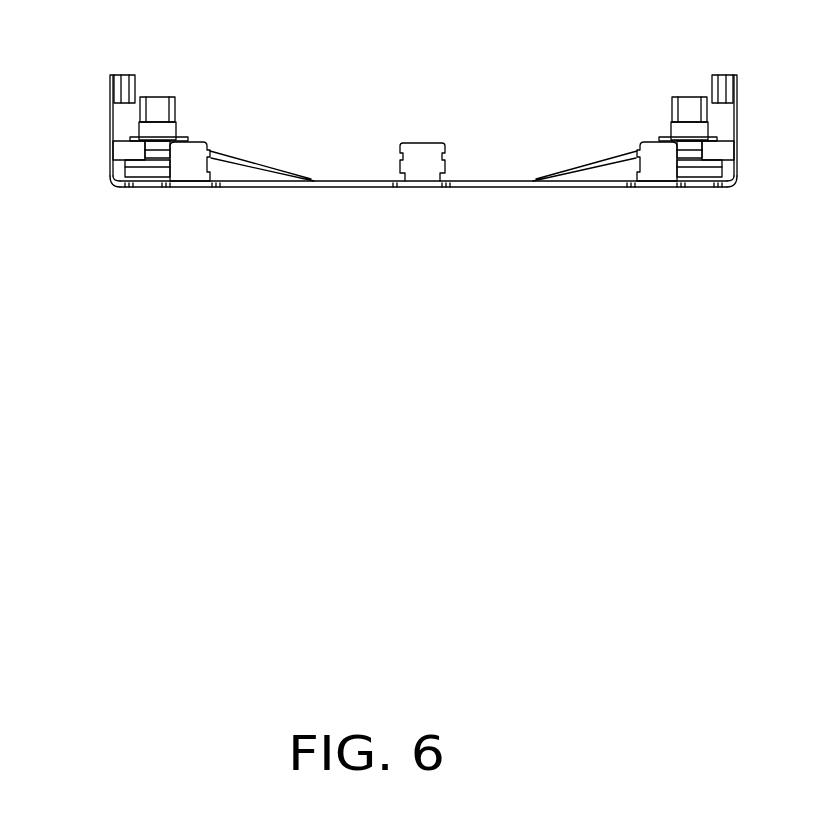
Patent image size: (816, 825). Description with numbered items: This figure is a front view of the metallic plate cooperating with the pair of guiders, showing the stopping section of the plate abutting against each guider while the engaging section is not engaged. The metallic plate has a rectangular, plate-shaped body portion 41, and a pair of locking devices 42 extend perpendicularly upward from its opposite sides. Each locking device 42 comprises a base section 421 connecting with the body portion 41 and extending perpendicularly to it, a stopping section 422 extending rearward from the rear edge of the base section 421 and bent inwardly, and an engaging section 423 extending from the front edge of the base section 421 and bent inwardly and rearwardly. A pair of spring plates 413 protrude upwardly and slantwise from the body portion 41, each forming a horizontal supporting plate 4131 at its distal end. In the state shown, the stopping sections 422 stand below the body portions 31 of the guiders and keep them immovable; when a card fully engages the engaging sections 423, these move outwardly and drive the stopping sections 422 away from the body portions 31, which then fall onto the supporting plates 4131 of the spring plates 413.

The body portion 31 is at (157, 127).
The body portion 41 is at (347, 187).
The locking device 42 is at (112, 173).
The spring plate 413 is at (238, 158).
The base section 421 is at (112, 110).
The stopping section 422 is at (133, 148).
The engaging section 423 is at (122, 85).
The supporting plate 4131 is at (162, 138).